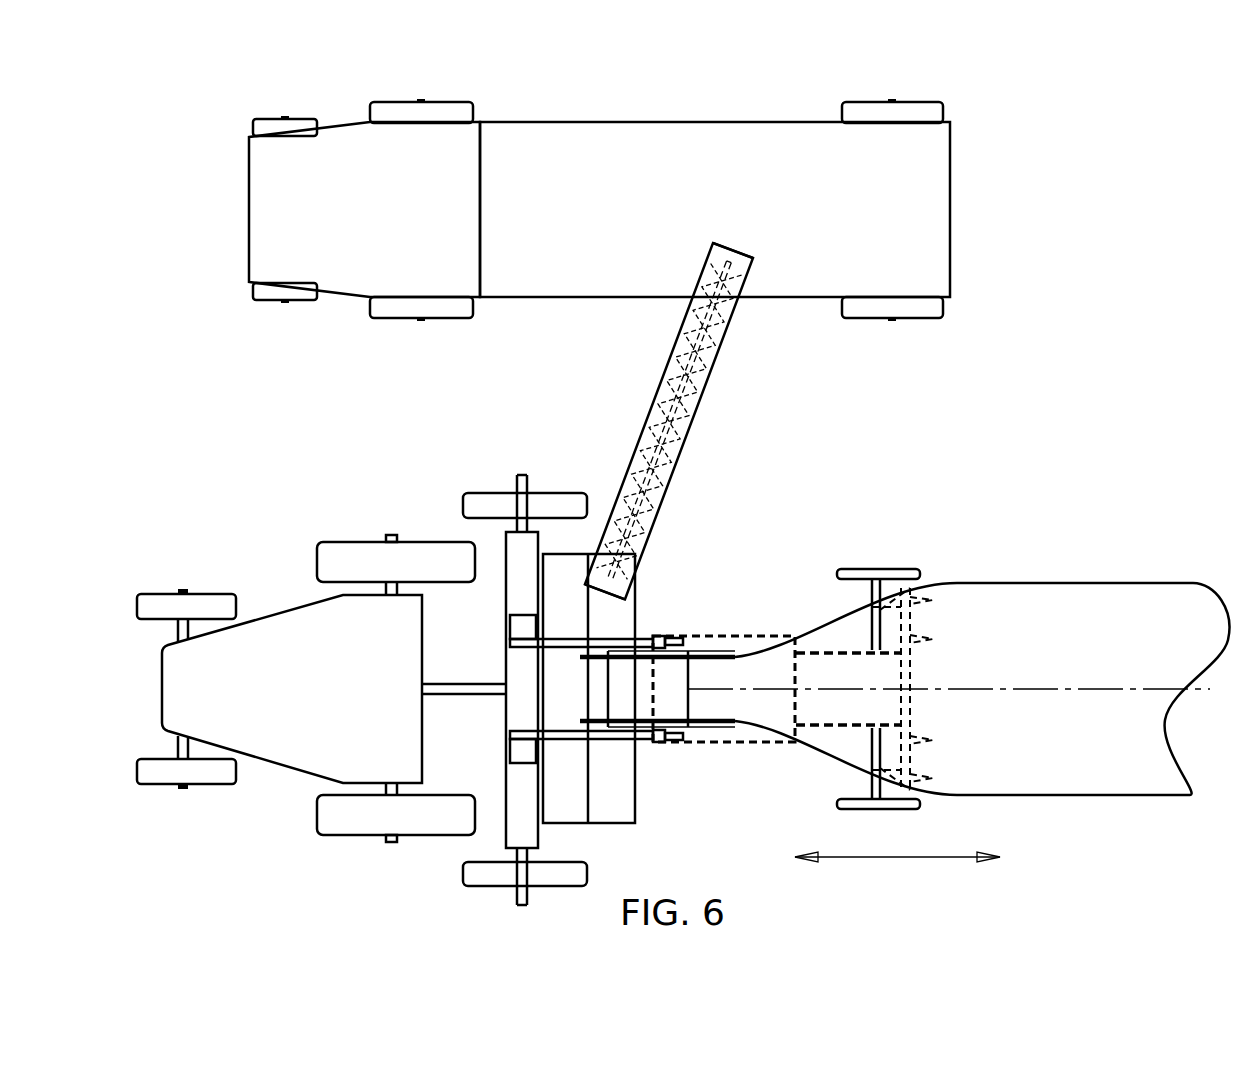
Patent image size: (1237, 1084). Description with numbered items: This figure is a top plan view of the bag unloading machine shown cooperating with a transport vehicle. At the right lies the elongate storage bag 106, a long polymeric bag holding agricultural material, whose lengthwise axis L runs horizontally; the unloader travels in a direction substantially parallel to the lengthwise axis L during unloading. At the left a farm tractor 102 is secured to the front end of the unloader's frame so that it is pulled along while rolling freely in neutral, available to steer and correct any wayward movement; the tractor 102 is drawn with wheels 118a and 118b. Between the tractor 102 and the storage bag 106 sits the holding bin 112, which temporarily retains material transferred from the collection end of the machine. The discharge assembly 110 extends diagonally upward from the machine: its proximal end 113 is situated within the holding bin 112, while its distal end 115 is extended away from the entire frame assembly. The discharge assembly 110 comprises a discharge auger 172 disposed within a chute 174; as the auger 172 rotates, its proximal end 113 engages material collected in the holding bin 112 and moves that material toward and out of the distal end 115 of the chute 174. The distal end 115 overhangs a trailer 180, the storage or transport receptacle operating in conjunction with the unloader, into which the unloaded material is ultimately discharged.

The farm tractor 102 is at (347, 686).
The elongate storage bag 106 is at (1127, 792).
The discharge assembly 110 is at (703, 410).
The holding bin 112 is at (619, 806).
The proximal end 113 is at (608, 597).
The distal end 115 is at (753, 227).
The wheel 118a is at (345, 818).
The wheel 118b is at (355, 543).
The discharge auger 172 is at (667, 392).
The chute 174 is at (678, 465).
The trailer 180 is at (930, 177).
The lengthwise axis L is at (1038, 690).